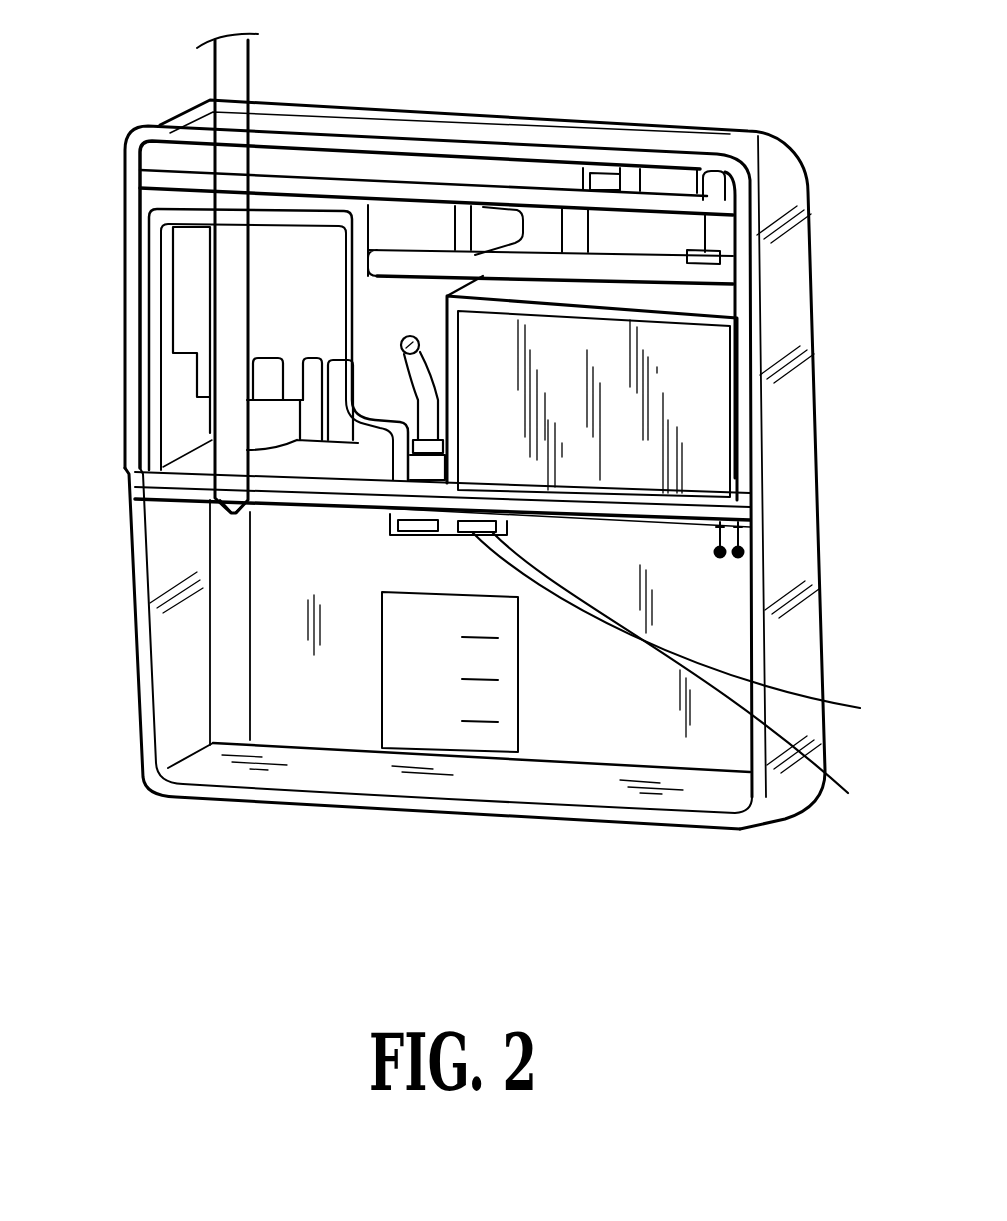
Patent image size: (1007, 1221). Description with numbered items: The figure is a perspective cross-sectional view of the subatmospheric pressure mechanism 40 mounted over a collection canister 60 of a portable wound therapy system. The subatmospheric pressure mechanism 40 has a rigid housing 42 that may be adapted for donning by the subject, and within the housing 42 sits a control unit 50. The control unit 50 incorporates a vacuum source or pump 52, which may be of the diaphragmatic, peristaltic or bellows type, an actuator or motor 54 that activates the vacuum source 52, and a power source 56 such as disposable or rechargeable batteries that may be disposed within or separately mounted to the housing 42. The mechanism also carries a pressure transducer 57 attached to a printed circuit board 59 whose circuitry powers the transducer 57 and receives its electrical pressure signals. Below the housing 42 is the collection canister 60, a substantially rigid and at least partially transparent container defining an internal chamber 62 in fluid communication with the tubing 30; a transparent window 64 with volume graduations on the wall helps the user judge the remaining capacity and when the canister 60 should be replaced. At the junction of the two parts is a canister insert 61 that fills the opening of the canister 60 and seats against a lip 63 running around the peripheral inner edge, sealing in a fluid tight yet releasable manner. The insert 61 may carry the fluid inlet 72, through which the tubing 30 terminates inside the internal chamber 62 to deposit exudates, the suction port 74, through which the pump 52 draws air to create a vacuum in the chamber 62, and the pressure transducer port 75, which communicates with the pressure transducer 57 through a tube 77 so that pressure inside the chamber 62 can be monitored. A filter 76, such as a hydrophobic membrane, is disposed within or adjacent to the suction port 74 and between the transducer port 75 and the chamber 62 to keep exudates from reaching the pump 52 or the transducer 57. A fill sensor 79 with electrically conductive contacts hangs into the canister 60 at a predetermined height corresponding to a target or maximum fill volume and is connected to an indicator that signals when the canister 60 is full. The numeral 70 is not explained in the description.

The tubing 30 is at (230, 60).
The subatmospheric pressure mechanism 40 is at (110, 78).
The housing 42 is at (122, 176).
The control unit 50 is at (150, 262).
The vacuum source or pump 52 is at (195, 318).
The actuator or motor 54 is at (213, 420).
The power source 56 is at (662, 383).
The pressure transducer 57 is at (437, 212).
The printed circuit board 59 is at (463, 200).
The collection canister 60 is at (130, 617).
The canister insert 61 is at (270, 510).
The internal chamber 62 is at (270, 703).
The lip 63 is at (700, 520).
The window 64 is at (500, 708).
The shelf 70 is at (163, 498).
The fluid inlet 72 is at (230, 506).
The suction port 74 is at (683, 626).
The pressure transducer port 75 is at (407, 533).
The filter 76 is at (691, 672).
The tube 77 is at (431, 336).
The fill sensor 79 is at (723, 557).